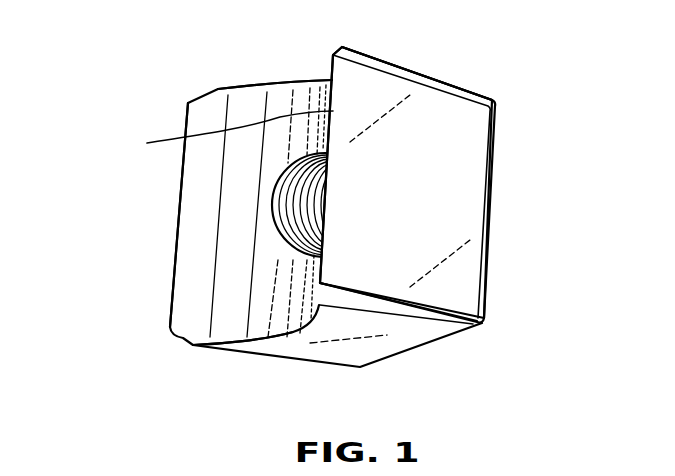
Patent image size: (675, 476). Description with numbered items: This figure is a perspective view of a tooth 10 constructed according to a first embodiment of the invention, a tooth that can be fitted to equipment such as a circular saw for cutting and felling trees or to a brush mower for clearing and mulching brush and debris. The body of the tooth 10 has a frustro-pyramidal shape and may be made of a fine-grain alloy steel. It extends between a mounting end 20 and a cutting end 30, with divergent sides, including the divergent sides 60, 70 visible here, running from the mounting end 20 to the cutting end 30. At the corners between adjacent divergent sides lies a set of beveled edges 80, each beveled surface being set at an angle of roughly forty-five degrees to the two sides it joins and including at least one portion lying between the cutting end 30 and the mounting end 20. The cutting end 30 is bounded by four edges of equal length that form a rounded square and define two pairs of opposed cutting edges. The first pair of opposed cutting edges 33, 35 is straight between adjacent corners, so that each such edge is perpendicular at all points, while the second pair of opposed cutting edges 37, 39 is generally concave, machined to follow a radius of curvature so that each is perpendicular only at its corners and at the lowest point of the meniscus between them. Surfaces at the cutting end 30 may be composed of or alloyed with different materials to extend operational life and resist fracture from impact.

The tooth 10 is at (128, 64).
The mounting end 20 is at (493, 218).
The cutting end 30 is at (233, 189).
The first pair of opposed cutting edges 33 is at (172, 256).
The first pair of opposed cutting edges 35 is at (224, 135).
The second pair of opposed cutting edges 37 is at (283, 85).
The second pair of opposed cutting edges 39 is at (260, 340).
The divergent side 60 is at (290, 350).
The divergent side 70 is at (437, 180).
The set of beveled edges 80 is at (393, 68).